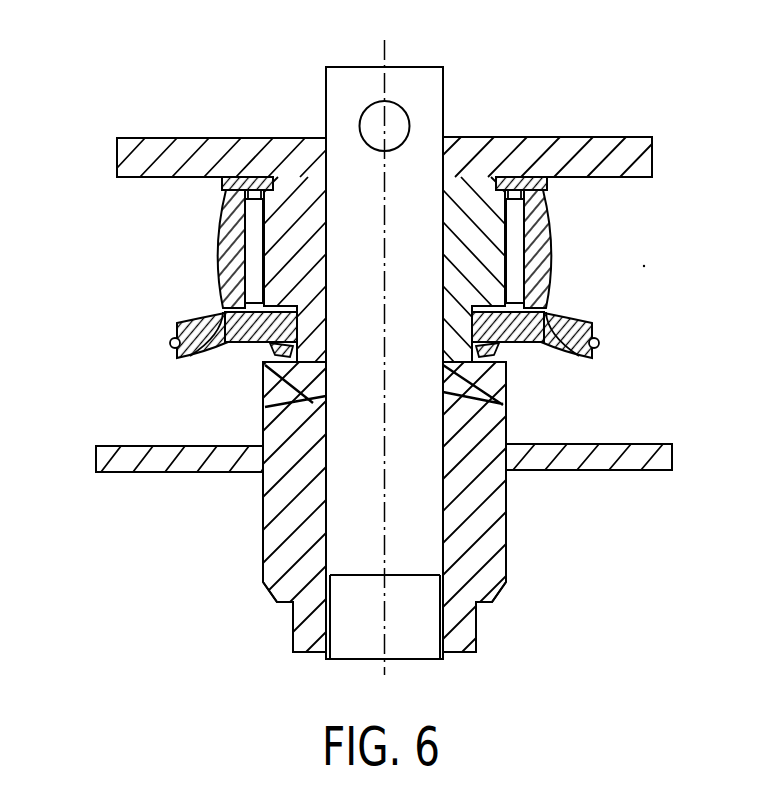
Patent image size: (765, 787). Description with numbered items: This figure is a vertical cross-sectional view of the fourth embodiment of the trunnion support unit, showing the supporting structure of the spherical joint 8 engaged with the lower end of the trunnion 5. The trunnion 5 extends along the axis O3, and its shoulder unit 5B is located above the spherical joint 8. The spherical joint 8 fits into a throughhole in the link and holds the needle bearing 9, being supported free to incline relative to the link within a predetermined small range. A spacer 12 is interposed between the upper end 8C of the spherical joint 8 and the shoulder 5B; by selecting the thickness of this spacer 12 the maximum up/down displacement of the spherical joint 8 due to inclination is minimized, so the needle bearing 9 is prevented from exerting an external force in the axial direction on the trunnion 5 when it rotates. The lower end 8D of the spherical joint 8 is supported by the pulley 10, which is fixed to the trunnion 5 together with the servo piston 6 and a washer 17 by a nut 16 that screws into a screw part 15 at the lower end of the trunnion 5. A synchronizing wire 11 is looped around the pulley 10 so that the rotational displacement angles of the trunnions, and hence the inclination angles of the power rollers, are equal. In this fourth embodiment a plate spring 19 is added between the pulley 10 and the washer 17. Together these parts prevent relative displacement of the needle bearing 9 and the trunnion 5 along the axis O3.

The axis O3 is at (386, 48).
The trunnion 5 is at (297, 163).
The shoulder unit 5B is at (143, 178).
The servo piston 6 is at (163, 463).
The spherical joint 8 is at (225, 228).
The upper end of the spherical joint 8C is at (243, 177).
The lower end of the spherical joint 8D is at (228, 343).
The needle bearing 9 is at (255, 248).
The pulley 10 is at (180, 357).
The synchronizing wire 11 is at (172, 336).
The spacer 12 is at (225, 191).
The screw part 15 is at (365, 648).
The nut 16 is at (300, 630).
The washer 17 is at (261, 389).
The plate spring 19 is at (262, 347).